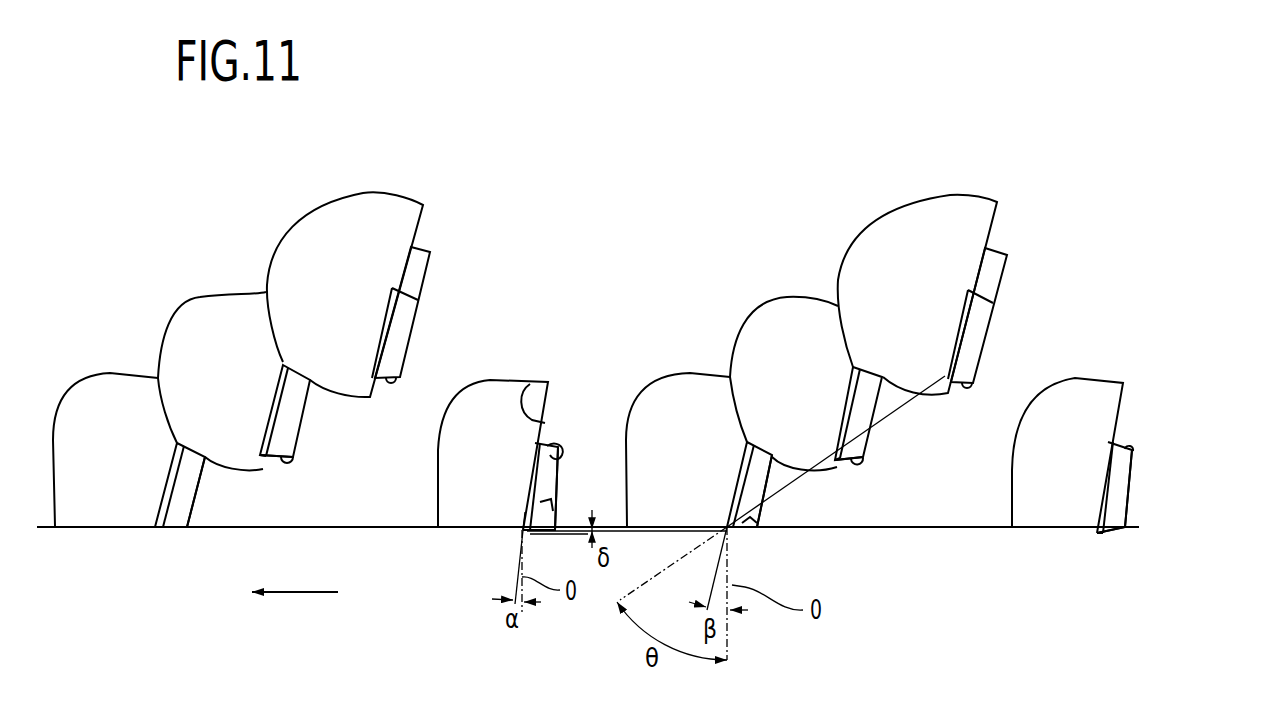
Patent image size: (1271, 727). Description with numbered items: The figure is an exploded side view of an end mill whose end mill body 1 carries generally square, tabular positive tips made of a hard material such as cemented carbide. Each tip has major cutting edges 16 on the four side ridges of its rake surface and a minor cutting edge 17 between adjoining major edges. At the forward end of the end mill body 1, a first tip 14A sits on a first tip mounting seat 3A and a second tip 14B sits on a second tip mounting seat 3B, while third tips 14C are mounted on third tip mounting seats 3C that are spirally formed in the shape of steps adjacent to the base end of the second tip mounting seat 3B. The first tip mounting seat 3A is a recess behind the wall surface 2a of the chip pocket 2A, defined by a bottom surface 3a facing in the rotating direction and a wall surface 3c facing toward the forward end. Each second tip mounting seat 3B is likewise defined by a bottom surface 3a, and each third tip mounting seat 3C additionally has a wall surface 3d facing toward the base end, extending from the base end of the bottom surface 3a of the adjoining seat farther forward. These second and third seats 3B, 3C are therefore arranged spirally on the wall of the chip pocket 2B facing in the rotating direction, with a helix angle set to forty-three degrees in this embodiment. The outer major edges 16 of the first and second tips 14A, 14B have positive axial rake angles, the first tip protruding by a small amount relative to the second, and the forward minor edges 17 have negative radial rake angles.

The end mill body 1 is at (642, 251).
The chip pocket 2A is at (492, 406).
The chip pocket 2B is at (214, 316).
The wall surface of the chip pocket 2a is at (530, 383).
The first tip mounting seat 3A is at (572, 463).
The second tip mounting seat 3B is at (205, 507).
The third tip mounting seat 3C is at (310, 443).
The bottom surface 3a is at (545, 505).
The wall surface 3c is at (555, 450).
The wall surface 3d is at (853, 447).
The first tip 14A is at (537, 477).
The second tip 14B is at (177, 483).
The third tip 14C is at (393, 333).
The major cutting edge 16 is at (148, 510).
The minor cutting edge 17 is at (522, 531).